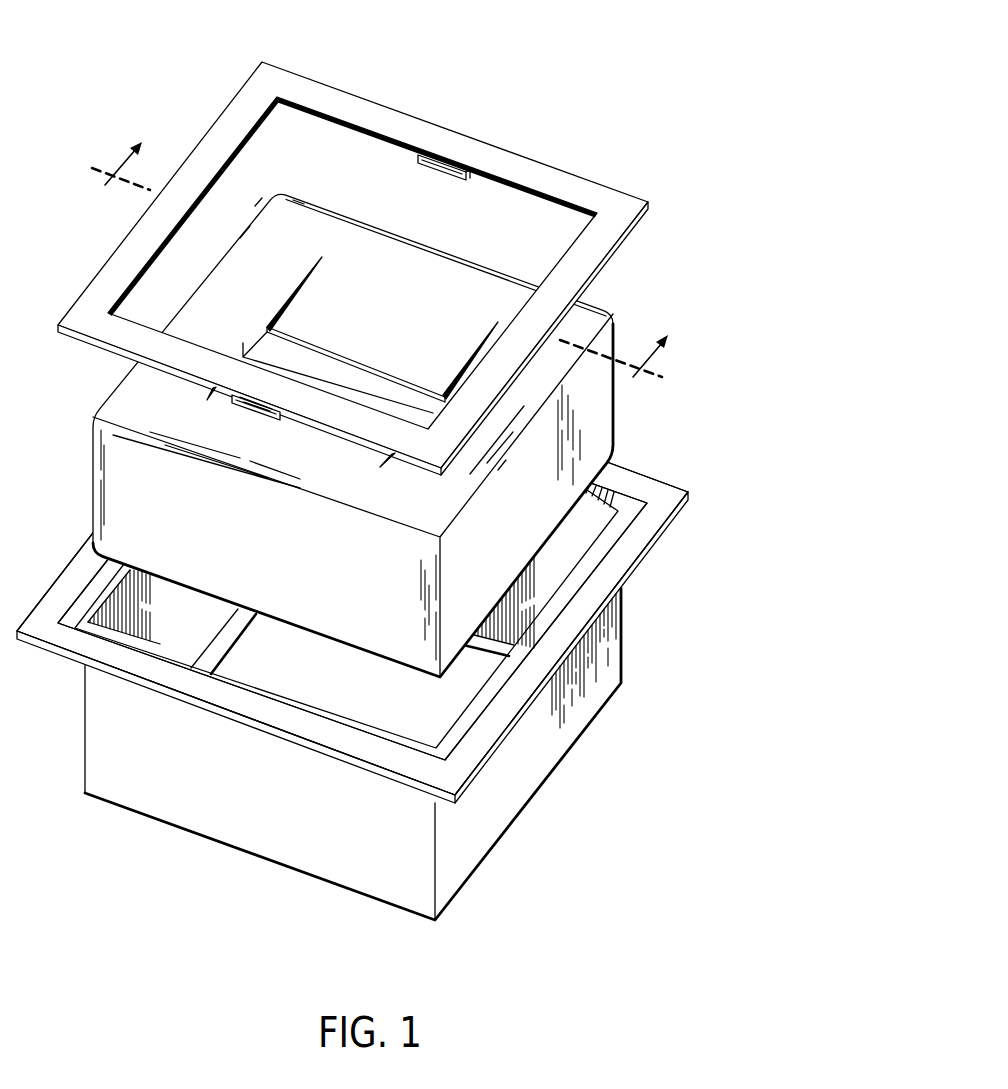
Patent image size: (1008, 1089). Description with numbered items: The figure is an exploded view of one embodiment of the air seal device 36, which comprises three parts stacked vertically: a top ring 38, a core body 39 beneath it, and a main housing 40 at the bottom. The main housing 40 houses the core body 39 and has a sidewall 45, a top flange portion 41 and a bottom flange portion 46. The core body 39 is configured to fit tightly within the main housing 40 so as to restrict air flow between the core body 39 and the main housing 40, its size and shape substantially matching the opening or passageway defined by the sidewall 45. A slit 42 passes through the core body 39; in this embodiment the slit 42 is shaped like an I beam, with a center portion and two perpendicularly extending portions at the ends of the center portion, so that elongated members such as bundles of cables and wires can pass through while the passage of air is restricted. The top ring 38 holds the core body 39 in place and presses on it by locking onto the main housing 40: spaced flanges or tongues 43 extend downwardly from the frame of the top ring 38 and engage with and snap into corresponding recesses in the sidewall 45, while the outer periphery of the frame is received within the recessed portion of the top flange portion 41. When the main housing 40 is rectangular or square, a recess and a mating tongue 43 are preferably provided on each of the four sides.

The air seal device 36 is at (580, 61).
The top ring 38 is at (656, 228).
The core body 39 is at (649, 423).
The main housing 40 is at (379, 566).
The top flange portion 41 is at (648, 519).
The slit 42 is at (345, 360).
The spaced flanges or tongues 43 is at (452, 179).
The sidewall 45 is at (533, 762).
The bottom flange portion 46 is at (215, 645).